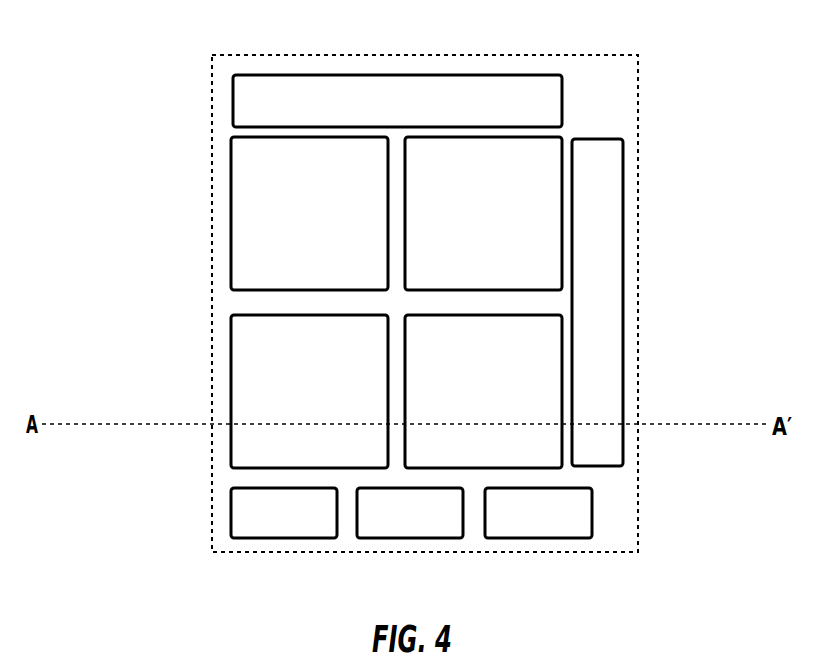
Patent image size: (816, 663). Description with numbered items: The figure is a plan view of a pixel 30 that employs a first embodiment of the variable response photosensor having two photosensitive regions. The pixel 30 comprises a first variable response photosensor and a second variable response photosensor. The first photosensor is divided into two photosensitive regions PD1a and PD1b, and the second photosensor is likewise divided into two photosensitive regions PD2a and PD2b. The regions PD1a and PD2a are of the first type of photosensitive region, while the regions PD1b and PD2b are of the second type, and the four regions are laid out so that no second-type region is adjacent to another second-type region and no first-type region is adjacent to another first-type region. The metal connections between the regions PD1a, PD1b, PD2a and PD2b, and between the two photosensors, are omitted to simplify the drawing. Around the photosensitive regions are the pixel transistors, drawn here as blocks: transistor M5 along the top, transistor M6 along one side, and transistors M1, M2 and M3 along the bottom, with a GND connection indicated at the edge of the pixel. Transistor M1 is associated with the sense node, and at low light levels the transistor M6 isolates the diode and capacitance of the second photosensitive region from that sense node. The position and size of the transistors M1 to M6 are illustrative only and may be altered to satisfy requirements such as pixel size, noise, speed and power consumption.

The pixel 30 is at (485, 280).
The transistor M5 is at (397, 101).
The transistor M6 is at (597, 302).
The transistor M1 is at (284, 513).
The transistor M2 is at (410, 513).
The transistor M3 is at (538, 513).
The photosensitive region PD1a is at (309, 391).
The photosensitive region PD1b is at (309, 213).
The photosensitive region PD2a is at (483, 213).
The photosensitive region PD2b is at (483, 391).
The ground contact region GND is at (212, 303).